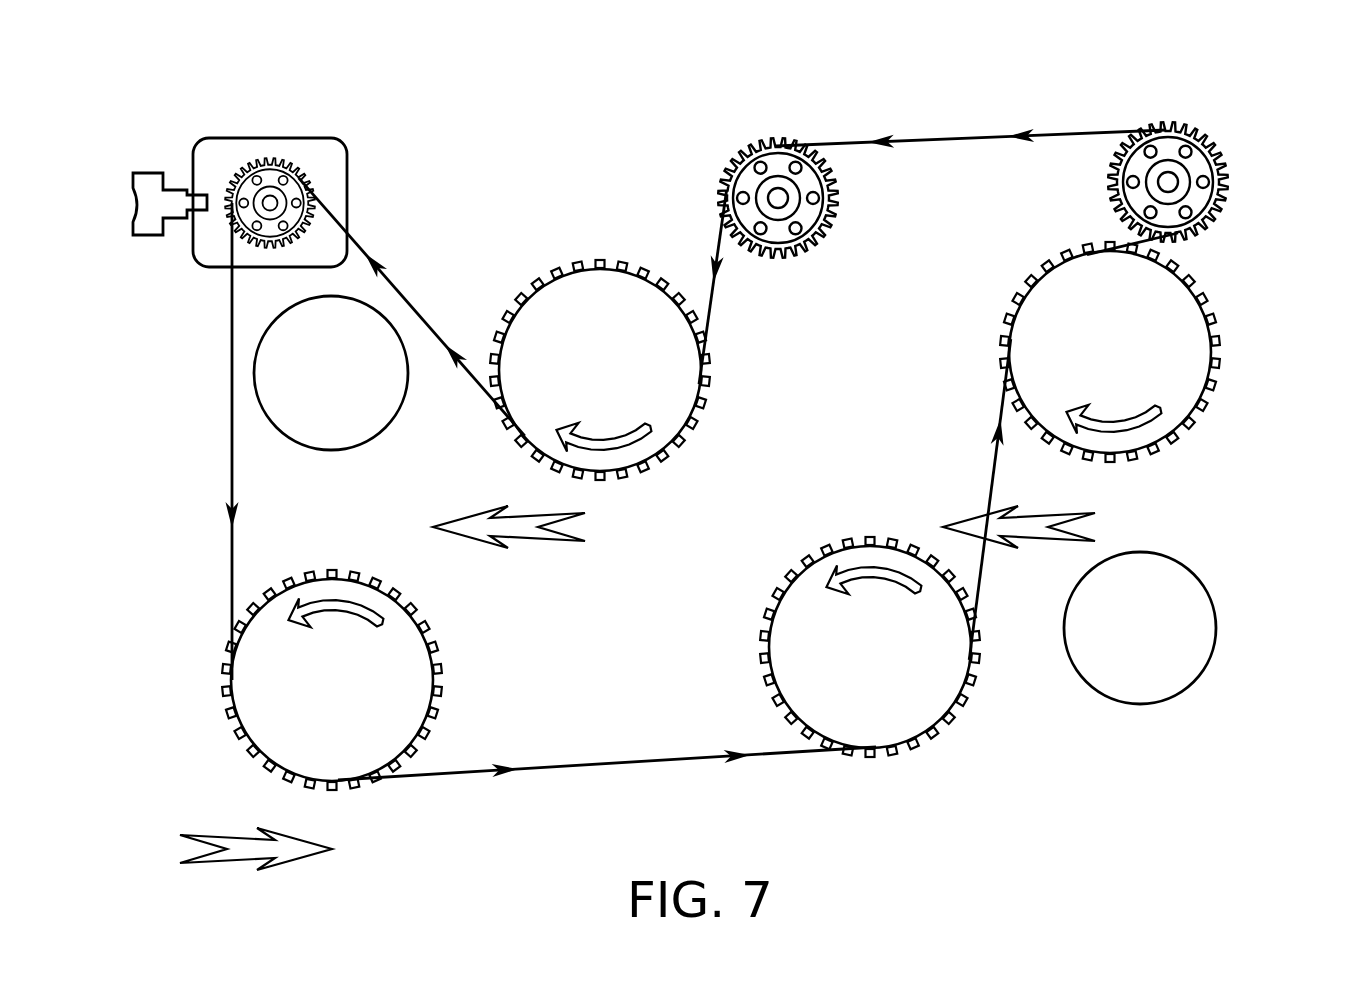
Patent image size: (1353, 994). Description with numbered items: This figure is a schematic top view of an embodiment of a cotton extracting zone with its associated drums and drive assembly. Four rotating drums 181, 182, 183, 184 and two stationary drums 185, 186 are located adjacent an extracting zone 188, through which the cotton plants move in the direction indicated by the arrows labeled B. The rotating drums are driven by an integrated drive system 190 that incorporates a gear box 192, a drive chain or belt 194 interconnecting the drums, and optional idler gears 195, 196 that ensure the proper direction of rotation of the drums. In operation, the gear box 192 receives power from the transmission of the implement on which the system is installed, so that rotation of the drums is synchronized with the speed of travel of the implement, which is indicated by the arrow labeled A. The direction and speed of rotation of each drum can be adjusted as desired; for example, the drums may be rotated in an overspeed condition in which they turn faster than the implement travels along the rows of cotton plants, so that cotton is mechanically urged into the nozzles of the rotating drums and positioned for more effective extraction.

The rotating drum 181 is at (624, 387).
The rotating drum 182 is at (1134, 369).
The rotating drum 183 is at (356, 697).
The rotating drum 184 is at (894, 664).
The stationary drum 185 is at (355, 390).
The stationary drum 186 is at (1164, 645).
The extracting zone 188 is at (742, 539).
The integrated drive system 190 is at (1093, 66).
The gear box 192 is at (347, 176).
The drive chain or belt 194 is at (231, 374).
The idler gear 195 is at (838, 197).
The idler gear 196 is at (1228, 180).